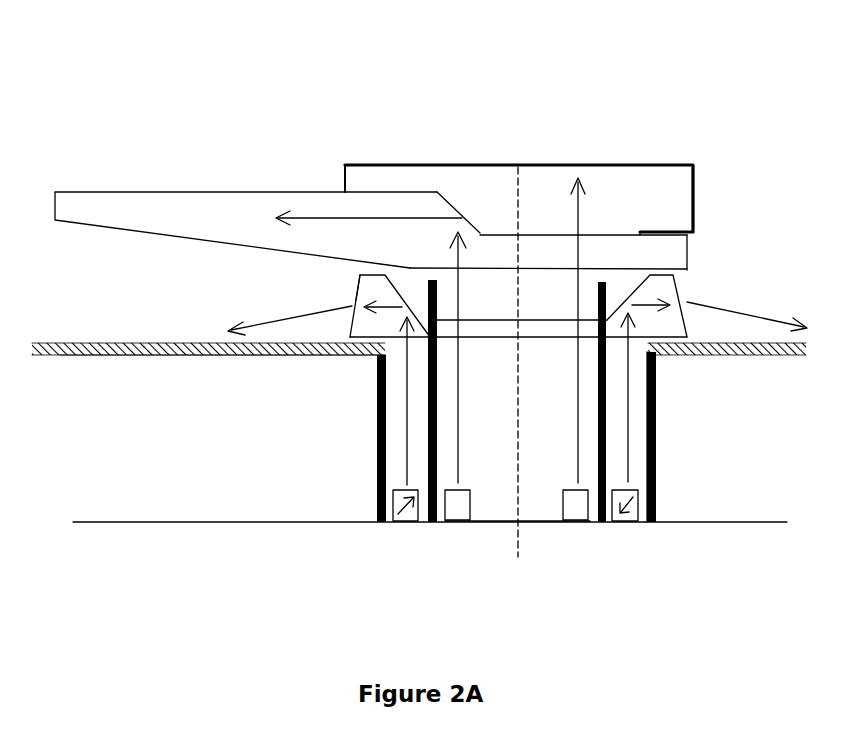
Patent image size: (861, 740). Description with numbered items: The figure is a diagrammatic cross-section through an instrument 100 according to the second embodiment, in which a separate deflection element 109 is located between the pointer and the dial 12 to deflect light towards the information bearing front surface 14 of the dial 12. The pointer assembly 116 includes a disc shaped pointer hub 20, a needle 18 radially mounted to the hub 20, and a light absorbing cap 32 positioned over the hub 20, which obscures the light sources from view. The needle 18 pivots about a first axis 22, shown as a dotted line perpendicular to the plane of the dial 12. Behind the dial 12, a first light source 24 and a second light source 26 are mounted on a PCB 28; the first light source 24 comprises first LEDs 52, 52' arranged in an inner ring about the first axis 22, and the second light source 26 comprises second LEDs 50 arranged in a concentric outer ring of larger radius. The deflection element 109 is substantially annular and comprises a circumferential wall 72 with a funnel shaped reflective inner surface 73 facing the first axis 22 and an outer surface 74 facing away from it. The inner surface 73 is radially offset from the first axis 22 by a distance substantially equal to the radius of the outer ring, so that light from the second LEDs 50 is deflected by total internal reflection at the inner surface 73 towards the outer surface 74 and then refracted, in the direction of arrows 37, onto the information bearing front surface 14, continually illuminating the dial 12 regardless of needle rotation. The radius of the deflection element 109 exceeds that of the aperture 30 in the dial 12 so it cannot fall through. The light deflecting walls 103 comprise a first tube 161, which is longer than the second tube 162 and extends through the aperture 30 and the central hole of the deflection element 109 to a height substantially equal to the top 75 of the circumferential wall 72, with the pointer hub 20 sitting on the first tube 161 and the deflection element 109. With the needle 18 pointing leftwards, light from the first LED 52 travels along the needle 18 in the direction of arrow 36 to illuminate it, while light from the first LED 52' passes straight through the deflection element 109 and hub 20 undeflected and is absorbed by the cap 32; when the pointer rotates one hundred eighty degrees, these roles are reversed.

The instrument 100 is at (207, 85).
The needle 18 is at (162, 200).
The arrow 36 is at (303, 218).
The pointer assembly 116 is at (688, 153).
The light absorbing cap 32 is at (695, 190).
The top of the circumferential wall 75 is at (700, 258).
The pointer hub 20 is at (693, 257).
The first axis 22 is at (521, 188).
The aperture 30 is at (478, 353).
The inner surface 73 is at (410, 290).
The outer surface 74 is at (687, 318).
The light deflection element 109 is at (352, 285).
The circumferential wall 72 is at (353, 291).
The arrows 37 is at (268, 328).
The information bearing front surface 14 is at (72, 332).
The dial 12 is at (172, 355).
The light deflecting walls 103 is at (430, 417).
The first tube 161 is at (607, 453).
The second tube 162 is at (657, 480).
The second light source 26 is at (380, 523).
The PCB 28 is at (270, 523).
The second LEDs 50 is at (417, 519).
The first LED 52 is at (455, 542).
The first LED 52' is at (590, 532).
The first light source 24 is at (578, 520).